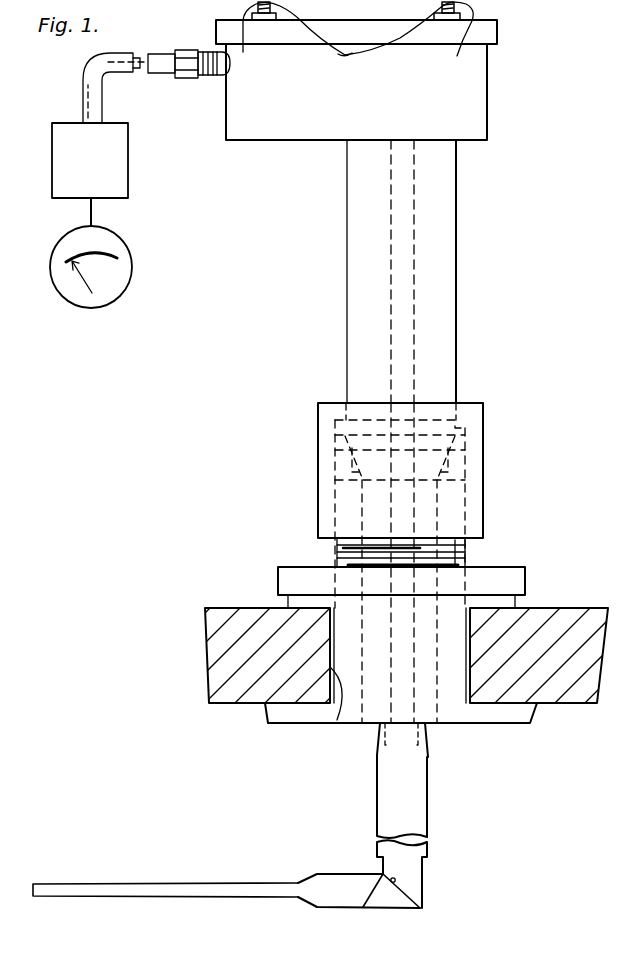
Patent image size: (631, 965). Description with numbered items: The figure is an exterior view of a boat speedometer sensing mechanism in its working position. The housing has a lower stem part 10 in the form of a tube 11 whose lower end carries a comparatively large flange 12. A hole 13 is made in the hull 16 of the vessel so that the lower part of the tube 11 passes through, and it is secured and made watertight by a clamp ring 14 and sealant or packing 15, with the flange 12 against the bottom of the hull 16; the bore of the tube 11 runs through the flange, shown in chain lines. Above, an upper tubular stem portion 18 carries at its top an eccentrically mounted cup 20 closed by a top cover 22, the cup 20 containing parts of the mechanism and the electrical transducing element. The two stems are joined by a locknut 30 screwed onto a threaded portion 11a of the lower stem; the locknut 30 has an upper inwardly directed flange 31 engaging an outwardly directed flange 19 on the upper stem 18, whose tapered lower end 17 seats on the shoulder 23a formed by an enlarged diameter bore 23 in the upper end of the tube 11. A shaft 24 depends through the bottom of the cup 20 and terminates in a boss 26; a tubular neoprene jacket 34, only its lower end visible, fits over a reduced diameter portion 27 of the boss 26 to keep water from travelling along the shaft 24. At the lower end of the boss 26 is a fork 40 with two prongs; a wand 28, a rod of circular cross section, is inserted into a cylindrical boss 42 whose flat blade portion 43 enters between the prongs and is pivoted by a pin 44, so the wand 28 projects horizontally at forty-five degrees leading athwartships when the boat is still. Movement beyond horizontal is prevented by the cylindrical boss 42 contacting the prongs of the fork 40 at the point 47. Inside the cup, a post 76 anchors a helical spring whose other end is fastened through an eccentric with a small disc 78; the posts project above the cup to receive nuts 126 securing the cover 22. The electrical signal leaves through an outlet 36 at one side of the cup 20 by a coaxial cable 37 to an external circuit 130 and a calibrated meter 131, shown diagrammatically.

The lower stem part 10 is at (494, 550).
The tube 11 is at (462, 540).
The threaded portion 11a is at (338, 547).
The flange 12 is at (528, 708).
The hole 13 is at (337, 720).
The clamp ring 14 is at (524, 575).
The sealant or packing 15 is at (290, 601).
The hull 16 is at (209, 655).
The tapered lower end 17 is at (358, 453).
The upper tubular stem portion 18 is at (456, 233).
The outwardly directed flange 19 is at (465, 428).
The cup 20 is at (487, 124).
The top cover 22 is at (497, 30).
The enlarged diameter bore 23 is at (470, 465).
The shoulder 23a is at (364, 478).
The shaft 24 is at (408, 191).
The boss 26 is at (410, 853).
The reduced diameter portion 27 is at (395, 771).
The wand 28 is at (168, 883).
The locknut 30 is at (484, 492).
The upper inwardly directed flange 31 is at (470, 405).
The tubular neoprene jacket 34 is at (426, 735).
The outlet 36 is at (156, 86).
The coaxial cable 37 is at (162, 57).
The fork 40 is at (425, 884).
The cylindrical boss 42 is at (325, 873).
The flat blade portion 43 is at (379, 895).
The pin 44 is at (420, 905).
The contact point 47 is at (382, 876).
The post 76 is at (294, 42).
The small disc 78 is at (409, 42).
The nuts 126 is at (347, 68).
The external circuit 130 is at (90, 160).
The meter 131 is at (125, 268).